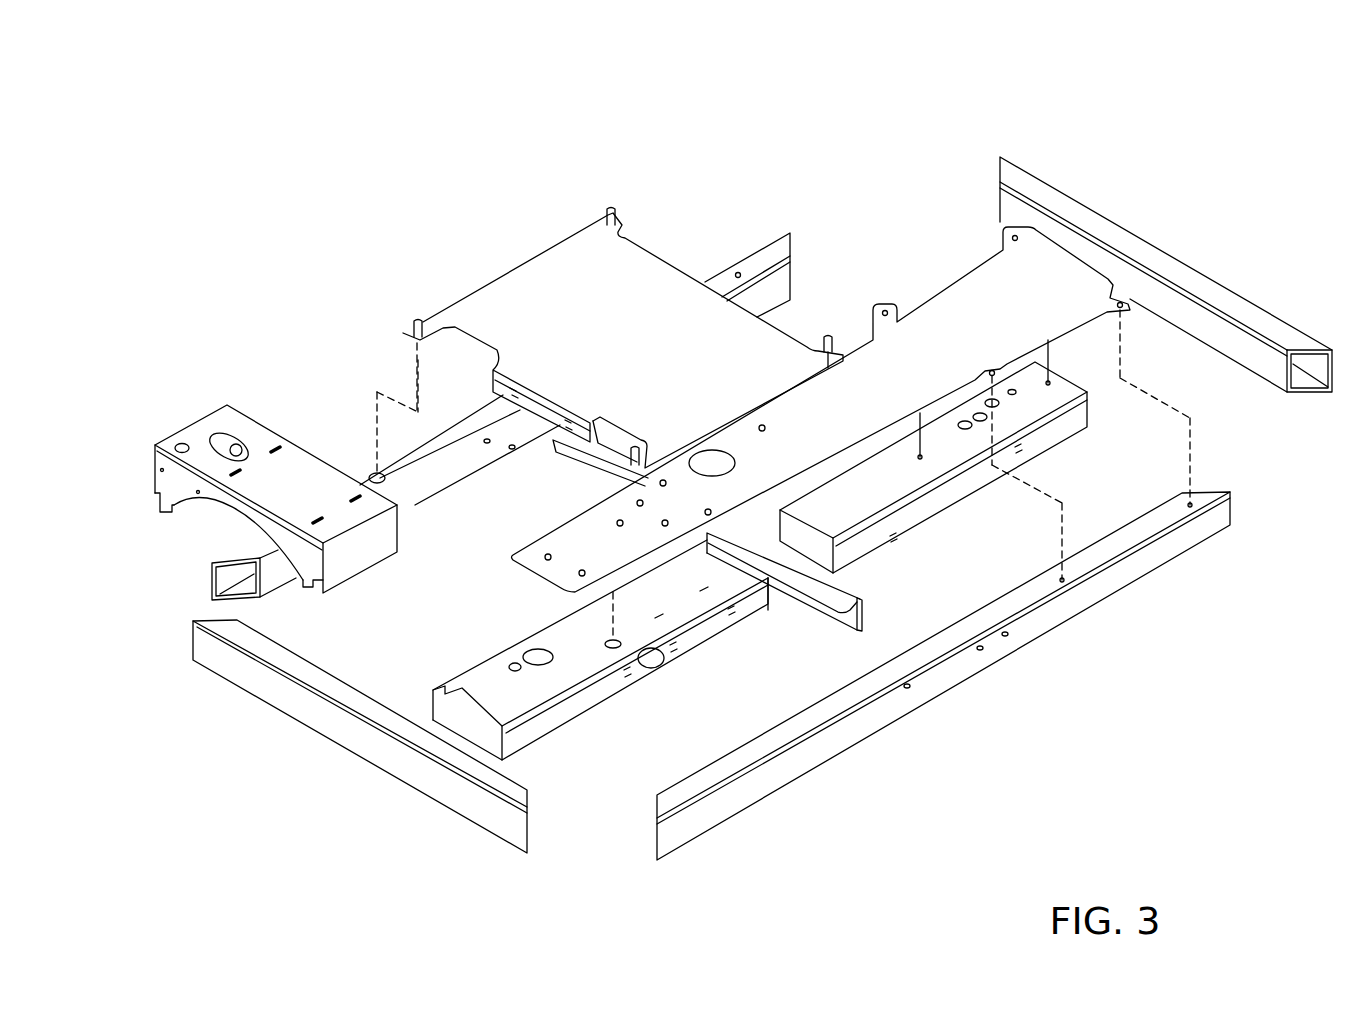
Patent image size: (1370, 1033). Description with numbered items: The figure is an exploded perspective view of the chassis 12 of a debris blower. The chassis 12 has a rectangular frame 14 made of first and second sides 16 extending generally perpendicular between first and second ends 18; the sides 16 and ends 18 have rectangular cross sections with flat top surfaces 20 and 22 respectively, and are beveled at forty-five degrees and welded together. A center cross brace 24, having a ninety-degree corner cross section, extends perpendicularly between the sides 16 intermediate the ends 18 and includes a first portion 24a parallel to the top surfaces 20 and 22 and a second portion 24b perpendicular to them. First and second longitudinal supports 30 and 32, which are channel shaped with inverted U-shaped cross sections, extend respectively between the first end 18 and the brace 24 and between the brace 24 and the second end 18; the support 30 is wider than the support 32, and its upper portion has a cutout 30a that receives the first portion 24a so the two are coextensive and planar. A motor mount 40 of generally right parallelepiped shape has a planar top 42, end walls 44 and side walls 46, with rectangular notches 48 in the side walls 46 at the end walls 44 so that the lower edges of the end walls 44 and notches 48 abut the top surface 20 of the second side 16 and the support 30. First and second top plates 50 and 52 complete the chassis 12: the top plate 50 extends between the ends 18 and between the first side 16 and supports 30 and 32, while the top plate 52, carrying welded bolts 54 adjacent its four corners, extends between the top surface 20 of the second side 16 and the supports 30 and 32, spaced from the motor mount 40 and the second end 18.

The chassis 12 is at (322, 156).
The rectangular frame 14 is at (302, 315).
The first and second sides 16 is at (1210, 530).
The first and second ends 18 is at (1272, 325).
The top surface 20 is at (1126, 540).
The top surface 22 is at (1150, 262).
The center cross brace 24 is at (830, 640).
The first portion 24a is at (823, 593).
The second portion 24b is at (862, 604).
The first longitudinal support 30 is at (525, 682).
The cutout 30a is at (762, 585).
The second longitudinal support 32 is at (1037, 402).
The motor mount 40 is at (192, 420).
The planar top 42 is at (308, 485).
The end walls 44 is at (372, 547).
The side walls 46 is at (233, 505).
The notches 48 is at (155, 505).
The first top plate 50 is at (988, 305).
The second top plate 52 is at (578, 272).
The bolts 54 is at (417, 319).